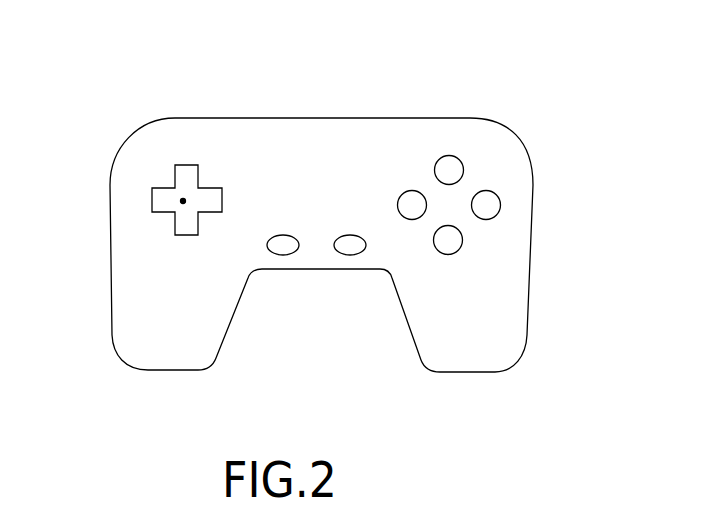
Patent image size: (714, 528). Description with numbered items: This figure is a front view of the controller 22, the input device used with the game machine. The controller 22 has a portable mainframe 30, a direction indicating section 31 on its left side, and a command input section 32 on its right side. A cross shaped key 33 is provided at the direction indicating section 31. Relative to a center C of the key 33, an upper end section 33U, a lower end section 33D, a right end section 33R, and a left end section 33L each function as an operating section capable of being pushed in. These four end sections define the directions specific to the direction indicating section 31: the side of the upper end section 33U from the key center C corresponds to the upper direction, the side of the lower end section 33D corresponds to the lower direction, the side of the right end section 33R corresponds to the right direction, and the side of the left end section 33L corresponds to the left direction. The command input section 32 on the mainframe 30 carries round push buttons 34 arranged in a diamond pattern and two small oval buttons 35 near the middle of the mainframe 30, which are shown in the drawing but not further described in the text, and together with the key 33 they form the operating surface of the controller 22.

The controller 22 is at (164, 18).
The portable mainframe 30 is at (315, 118).
The direction indicating section 31 is at (228, 160).
The command input section 32 is at (409, 150).
The cross shaped key 33 is at (173, 178).
The upper end section 33U is at (188, 163).
The left end section 33L is at (160, 197).
The right end section 33R is at (216, 199).
The lower end section 33D is at (183, 236).
The center of the key C is at (181, 204).
The push buttons 34 is at (450, 170).
The select/start buttons 35 is at (346, 256).